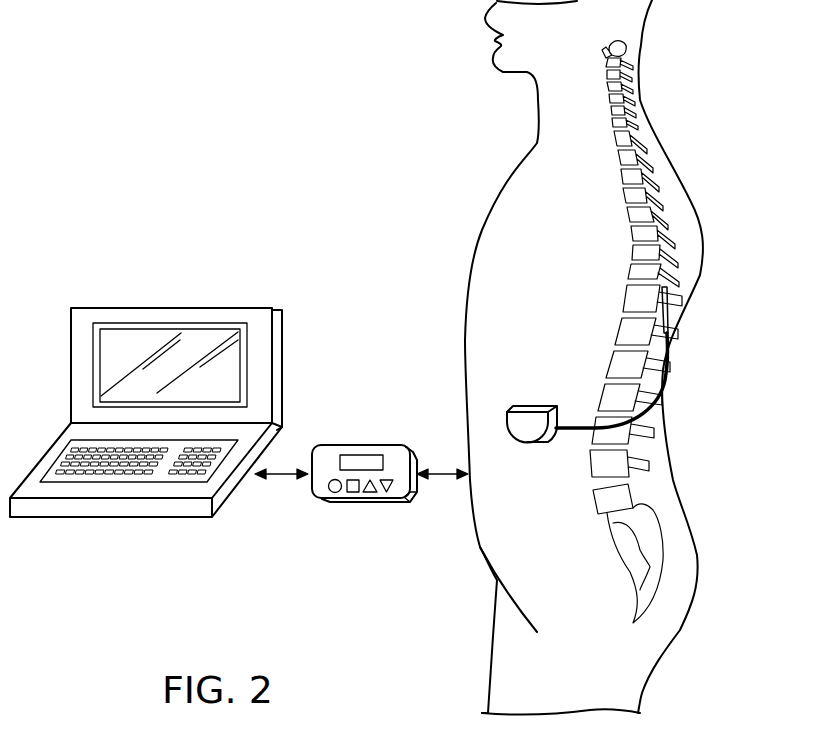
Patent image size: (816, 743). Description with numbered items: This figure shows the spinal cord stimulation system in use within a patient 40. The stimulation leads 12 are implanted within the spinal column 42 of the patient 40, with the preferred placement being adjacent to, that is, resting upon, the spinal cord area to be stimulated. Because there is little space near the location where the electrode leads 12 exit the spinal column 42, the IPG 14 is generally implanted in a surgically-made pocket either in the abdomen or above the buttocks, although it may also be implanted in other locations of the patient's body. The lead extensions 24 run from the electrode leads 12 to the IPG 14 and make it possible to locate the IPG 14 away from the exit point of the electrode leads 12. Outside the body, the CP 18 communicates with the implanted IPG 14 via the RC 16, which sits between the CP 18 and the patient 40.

The stimulation lead 12 is at (668, 306).
The IPG 14 is at (530, 433).
The RC 16 is at (383, 427).
The CP 18 is at (158, 301).
The lead extension 24 is at (668, 383).
The patient 40 is at (576, 357).
The spinal column 42 is at (628, 286).